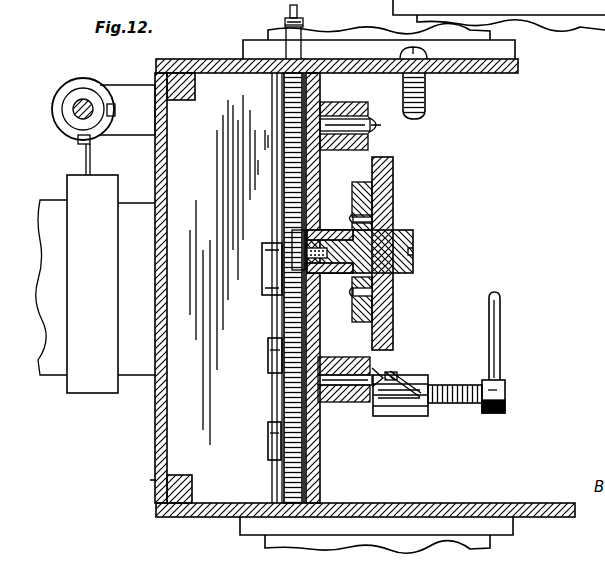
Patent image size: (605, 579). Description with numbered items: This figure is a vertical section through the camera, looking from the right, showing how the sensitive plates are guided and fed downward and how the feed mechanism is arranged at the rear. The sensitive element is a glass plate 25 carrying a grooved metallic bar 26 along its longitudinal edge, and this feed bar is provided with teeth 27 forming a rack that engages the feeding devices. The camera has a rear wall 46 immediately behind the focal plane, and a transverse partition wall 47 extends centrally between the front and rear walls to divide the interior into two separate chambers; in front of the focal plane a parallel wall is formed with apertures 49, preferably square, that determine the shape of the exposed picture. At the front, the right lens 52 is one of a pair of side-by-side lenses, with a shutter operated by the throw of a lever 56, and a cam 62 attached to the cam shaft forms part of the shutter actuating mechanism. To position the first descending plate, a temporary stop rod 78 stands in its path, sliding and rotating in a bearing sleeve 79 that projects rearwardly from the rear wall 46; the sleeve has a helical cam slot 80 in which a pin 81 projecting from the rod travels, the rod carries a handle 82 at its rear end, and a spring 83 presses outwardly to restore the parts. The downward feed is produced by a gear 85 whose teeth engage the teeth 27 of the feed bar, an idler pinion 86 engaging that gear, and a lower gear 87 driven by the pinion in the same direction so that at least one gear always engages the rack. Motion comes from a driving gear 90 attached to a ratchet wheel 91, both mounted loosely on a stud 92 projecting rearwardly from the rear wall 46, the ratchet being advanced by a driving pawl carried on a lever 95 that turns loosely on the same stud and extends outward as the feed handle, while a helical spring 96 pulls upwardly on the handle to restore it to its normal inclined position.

The glass plate 25 is at (285, 9).
The grooved metallic bar 26 is at (303, 20).
The teeth 27 is at (283, 104).
The rear wall 46 is at (321, 86).
The transverse partition wall 47 is at (229, 270).
The apertures 49 is at (283, 208).
The right lens 52 is at (95, 284).
The lever 56 is at (85, 160).
The right cam 62 is at (70, 86).
The temporary stop rod 78 is at (448, 402).
The bearing sleeve 79 is at (400, 417).
The helical cam slot 80 is at (393, 397).
The pin 81 is at (395, 378).
The handle 82 is at (500, 323).
The spring 83 is at (447, 387).
The gear 85 is at (281, 300).
The idler pinion 86 is at (280, 365).
The lower gear 87 is at (280, 479).
The gear 90 is at (360, 166).
The ratchet wheel 91 is at (394, 190).
The stud 92 is at (413, 236).
The lever 95 is at (395, 292).
The helical spring 96 is at (428, 96).